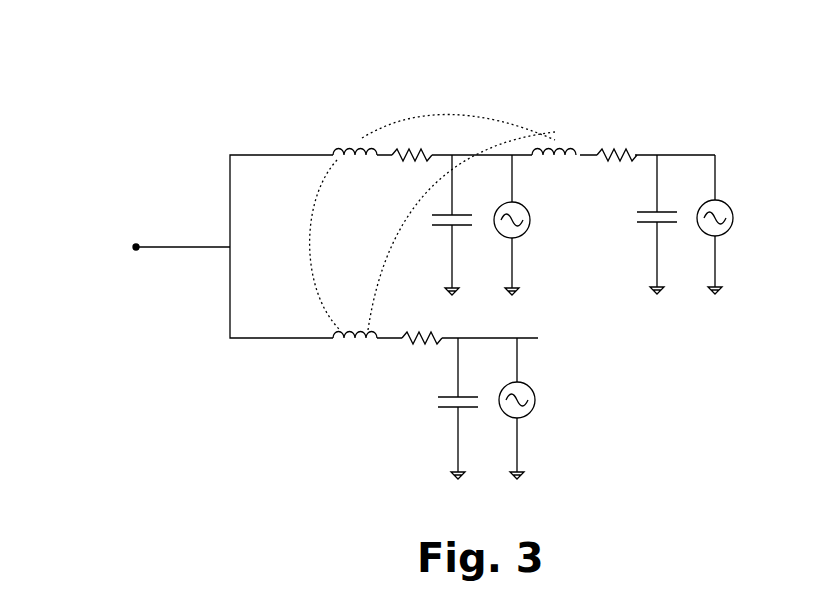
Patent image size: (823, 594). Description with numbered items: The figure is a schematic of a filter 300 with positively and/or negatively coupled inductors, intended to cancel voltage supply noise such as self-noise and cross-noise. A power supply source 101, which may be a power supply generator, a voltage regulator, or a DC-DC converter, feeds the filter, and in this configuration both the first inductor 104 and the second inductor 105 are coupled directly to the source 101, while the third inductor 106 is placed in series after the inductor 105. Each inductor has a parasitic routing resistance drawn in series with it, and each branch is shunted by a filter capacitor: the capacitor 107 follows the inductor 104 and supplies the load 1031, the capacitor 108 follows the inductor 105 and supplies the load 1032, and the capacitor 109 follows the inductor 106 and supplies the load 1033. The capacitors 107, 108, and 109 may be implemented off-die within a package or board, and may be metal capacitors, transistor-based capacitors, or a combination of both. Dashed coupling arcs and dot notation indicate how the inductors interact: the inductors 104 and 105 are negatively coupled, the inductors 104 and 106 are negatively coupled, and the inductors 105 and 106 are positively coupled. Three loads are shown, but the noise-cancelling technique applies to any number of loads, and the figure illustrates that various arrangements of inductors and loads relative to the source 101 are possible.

The filter 300 is at (118, 108).
The power supply source 101 is at (243, 152).
The inductor 105 is at (342, 146).
The inductor 106 is at (568, 143).
The inductor 104 is at (342, 338).
The capacitor 108 is at (447, 226).
The capacitor 109 is at (643, 230).
The capacitor 107 is at (448, 408).
The load 1031 is at (530, 406).
The load 1032 is at (500, 222).
The load 1033 is at (705, 233).